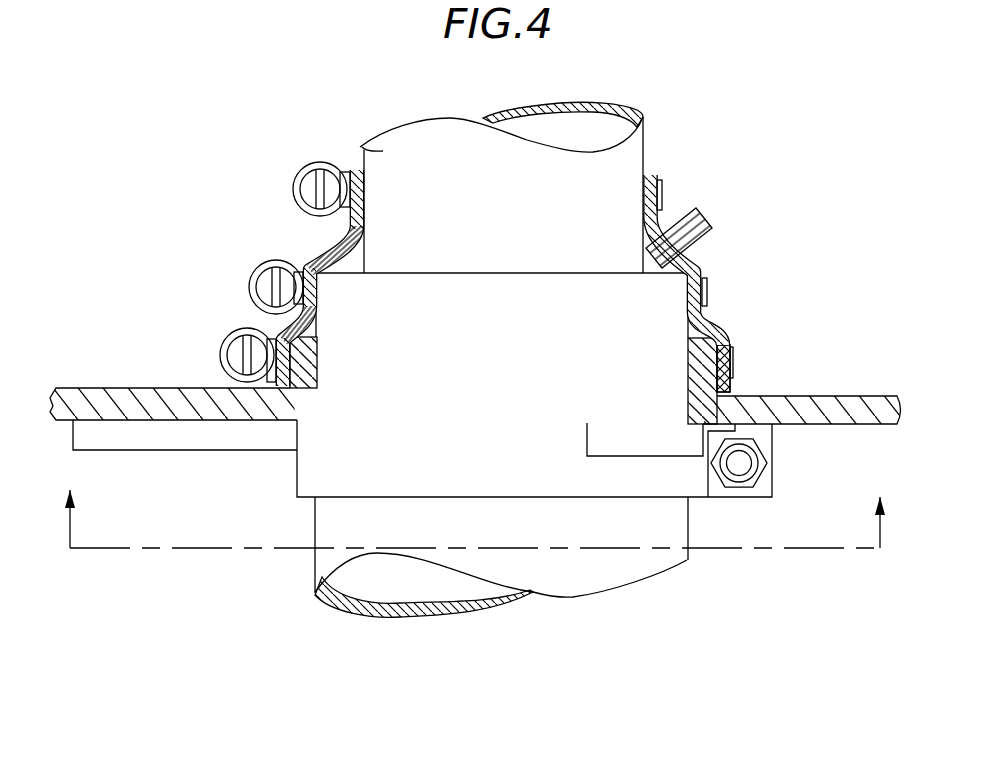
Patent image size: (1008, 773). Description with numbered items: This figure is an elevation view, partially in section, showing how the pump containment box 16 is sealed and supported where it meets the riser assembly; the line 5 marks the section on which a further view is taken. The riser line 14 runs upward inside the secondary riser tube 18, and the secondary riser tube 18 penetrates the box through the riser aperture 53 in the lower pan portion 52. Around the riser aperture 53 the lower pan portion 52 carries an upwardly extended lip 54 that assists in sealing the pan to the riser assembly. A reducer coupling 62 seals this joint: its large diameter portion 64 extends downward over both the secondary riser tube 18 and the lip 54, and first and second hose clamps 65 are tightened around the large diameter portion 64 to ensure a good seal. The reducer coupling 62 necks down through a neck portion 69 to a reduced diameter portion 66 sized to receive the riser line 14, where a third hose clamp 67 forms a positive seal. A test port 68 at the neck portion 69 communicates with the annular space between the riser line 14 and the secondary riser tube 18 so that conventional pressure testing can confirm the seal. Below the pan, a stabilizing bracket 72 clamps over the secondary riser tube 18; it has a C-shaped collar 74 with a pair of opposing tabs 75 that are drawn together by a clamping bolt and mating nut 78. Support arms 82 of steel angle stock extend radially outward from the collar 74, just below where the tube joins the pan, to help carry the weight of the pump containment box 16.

The section line 5- 5 is at (475, 500).
The riser line 14 is at (382, 151).
The pump containment box 16 is at (475, 368).
The secondary riser tube 18 is at (690, 376).
The lower pan portion 52 is at (823, 413).
The riser aperture 53 is at (317, 360).
The upwardly extended lip 54 is at (706, 360).
The reducer coupling 62 is at (247, 249).
The large diameter portion 64 is at (708, 313).
The first and second hose clamps 65 is at (249, 289).
The reduced diameter portion 66 is at (657, 183).
The third hose clamp 67 is at (293, 190).
The test port 68 is at (712, 238).
The neck portion 69 is at (665, 216).
The stabilizing bracket 72 is at (735, 515).
The C-shaped collar 74 is at (350, 468).
The opposing tabs 75 is at (763, 487).
The mating nut 78 is at (753, 446).
The support arms 82 is at (197, 442).